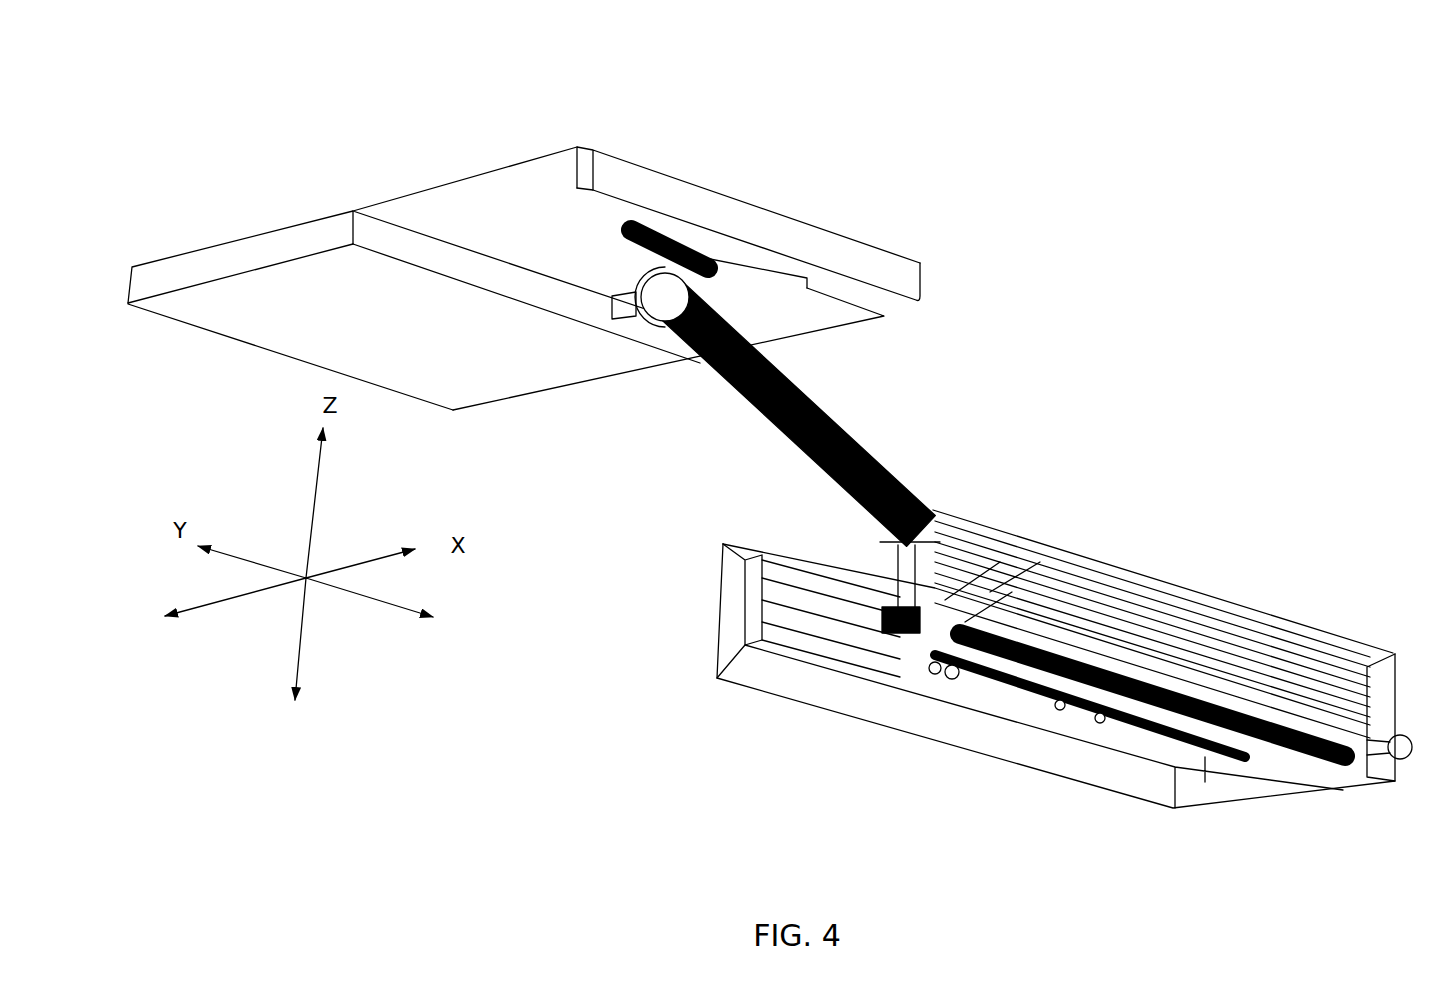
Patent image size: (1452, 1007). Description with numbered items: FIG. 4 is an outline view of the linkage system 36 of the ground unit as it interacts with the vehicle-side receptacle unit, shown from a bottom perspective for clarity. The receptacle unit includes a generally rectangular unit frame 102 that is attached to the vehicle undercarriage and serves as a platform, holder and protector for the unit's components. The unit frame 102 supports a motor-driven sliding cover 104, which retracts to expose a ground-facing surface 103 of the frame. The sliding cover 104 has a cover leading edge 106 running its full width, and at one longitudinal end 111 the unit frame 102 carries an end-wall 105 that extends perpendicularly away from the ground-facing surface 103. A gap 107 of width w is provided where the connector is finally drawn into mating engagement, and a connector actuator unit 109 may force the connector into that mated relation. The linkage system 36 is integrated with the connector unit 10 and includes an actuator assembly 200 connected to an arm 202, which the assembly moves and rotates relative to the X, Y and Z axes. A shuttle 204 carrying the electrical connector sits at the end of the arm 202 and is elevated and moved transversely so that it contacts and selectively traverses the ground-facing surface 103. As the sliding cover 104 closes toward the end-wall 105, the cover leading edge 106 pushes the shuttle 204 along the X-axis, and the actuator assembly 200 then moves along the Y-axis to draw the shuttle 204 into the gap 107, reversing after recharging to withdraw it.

The connector unit 10 is at (1213, 483).
The linkage system 36 is at (752, 421).
The unit frame 102 is at (398, 198).
The ground-facing surface 103 is at (525, 259).
The sliding cover 104 is at (390, 332).
The end-wall 105 is at (569, 138).
The cover leading edge 106 is at (419, 252).
The gap 107 is at (899, 322).
The connector actuator unit 109 is at (752, 332).
The longitudinal end 111 is at (607, 186).
The actuator assembly 200 is at (1073, 583).
The arm 202 is at (852, 434).
The shuttle 204 is at (695, 232).